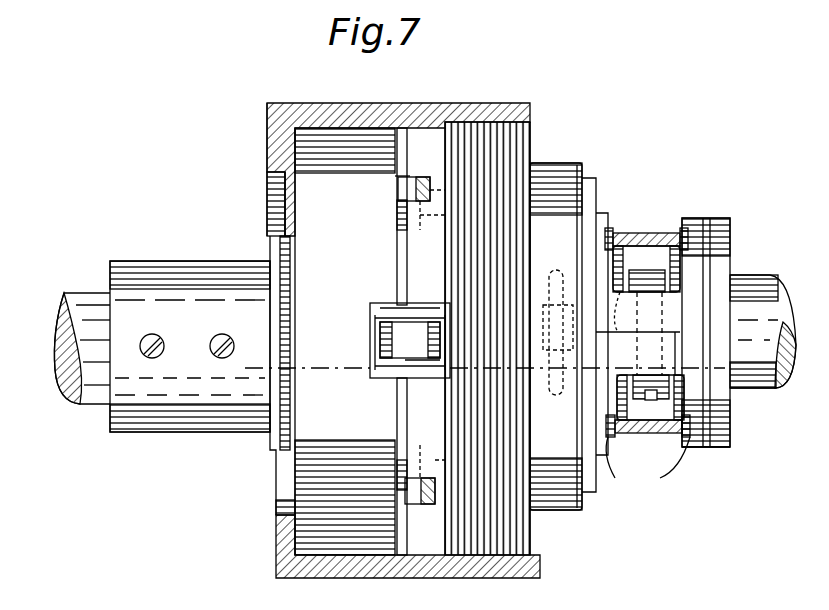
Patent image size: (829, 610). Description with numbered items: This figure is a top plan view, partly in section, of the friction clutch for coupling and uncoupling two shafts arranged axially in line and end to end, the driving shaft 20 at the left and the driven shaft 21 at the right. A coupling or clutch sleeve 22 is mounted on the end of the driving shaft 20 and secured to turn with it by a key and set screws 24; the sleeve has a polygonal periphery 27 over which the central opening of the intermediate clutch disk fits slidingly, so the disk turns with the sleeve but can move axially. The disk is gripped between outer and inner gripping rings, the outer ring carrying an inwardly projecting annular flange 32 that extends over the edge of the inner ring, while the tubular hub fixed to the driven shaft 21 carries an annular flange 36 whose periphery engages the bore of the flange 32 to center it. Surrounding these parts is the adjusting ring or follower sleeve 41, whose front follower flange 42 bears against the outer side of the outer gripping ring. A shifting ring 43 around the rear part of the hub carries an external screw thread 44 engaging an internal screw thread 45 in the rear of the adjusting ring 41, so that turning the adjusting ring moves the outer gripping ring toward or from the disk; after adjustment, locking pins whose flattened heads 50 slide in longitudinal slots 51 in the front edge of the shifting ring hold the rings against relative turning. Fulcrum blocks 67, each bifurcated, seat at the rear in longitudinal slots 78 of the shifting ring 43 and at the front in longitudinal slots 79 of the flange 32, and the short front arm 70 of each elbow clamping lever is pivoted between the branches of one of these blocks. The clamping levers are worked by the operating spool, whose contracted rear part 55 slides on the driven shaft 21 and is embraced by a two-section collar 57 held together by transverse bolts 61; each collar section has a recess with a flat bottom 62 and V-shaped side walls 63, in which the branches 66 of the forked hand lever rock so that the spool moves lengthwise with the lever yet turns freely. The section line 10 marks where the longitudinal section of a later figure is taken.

The section line 10 is at (483, 365).
The driving shaft 20 is at (64, 352).
The driven shaft 21 is at (780, 389).
The coupling sleeve 22 is at (190, 346).
The set screws 24 is at (214, 355).
The polygonal periphery 27 is at (281, 308).
The annular flange 32 is at (345, 341).
The hub flange 36 is at (420, 341).
The adjusting ring 41 is at (338, 118).
The follower flange 42 is at (278, 538).
The shifting ring 43 is at (605, 336).
The external screw thread 44 is at (530, 134).
The internal screw thread 45 is at (502, 122).
The flattened head 50 is at (398, 192).
The longitudinal slot 51 is at (424, 170).
The rear part of operating spool 55 is at (715, 457).
The collar 57 is at (694, 220).
The transverse bolts 61 is at (684, 344).
The flat bottom 62 is at (626, 344).
The V-shaped side walls 63 is at (684, 232).
The branches 66 is at (646, 246).
The fulcrum blocks 67 is at (380, 380).
The short front arm 70 is at (381, 344).
The longitudinal slot 78 is at (436, 380).
The longitudinal slot 79 is at (378, 308).